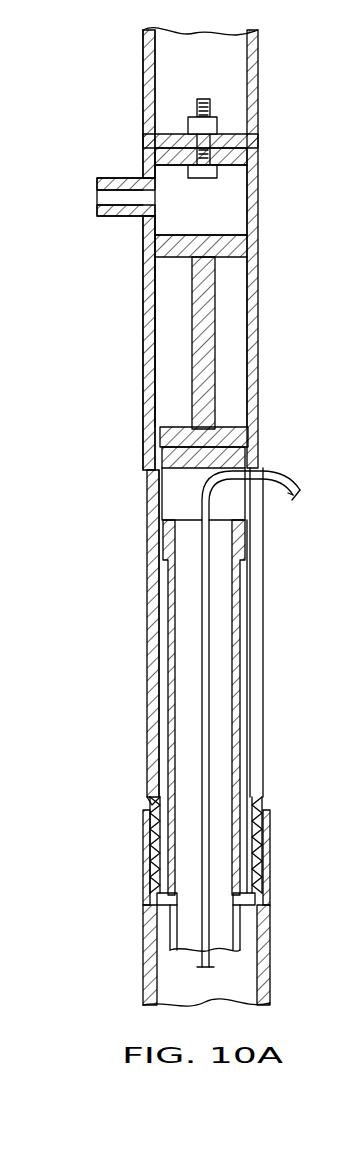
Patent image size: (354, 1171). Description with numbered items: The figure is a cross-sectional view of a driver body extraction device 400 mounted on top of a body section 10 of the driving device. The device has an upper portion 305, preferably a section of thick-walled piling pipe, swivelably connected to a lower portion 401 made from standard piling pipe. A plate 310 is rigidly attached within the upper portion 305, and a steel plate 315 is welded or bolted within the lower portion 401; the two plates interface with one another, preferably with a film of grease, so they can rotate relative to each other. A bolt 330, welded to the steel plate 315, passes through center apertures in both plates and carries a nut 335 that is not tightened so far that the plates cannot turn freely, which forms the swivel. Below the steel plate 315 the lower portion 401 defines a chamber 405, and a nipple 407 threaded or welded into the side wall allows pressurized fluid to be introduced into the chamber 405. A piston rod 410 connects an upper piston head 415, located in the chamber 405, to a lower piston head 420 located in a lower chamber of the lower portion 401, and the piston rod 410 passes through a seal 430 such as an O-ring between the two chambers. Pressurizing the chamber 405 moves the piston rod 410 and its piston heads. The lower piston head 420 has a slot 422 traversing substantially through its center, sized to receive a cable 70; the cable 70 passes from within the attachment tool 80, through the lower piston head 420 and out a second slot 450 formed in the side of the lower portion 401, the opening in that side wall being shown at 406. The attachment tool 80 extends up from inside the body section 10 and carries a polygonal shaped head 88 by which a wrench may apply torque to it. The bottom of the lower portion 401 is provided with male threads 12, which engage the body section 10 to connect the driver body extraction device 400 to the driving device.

The upper portion 305 is at (262, 64).
The nut 335 is at (196, 108).
The plate 310 is at (256, 140).
The steel plate 315 is at (257, 156).
The bolt 330 is at (222, 181).
The chamber 405 is at (229, 217).
The nipple 407 is at (100, 197).
The upper piston head 415 is at (168, 247).
The lower portion 401 is at (260, 312).
The driver body extraction device 400 is at (299, 357).
The piston rod 410 is at (191, 351).
The seal 430 is at (181, 432).
The lower piston head 420 is at (170, 458).
The cable 70 is at (291, 488).
The slot 422 is at (181, 491).
The polygonal shaped head 88 is at (165, 542).
The attachment tool 80 is at (150, 655).
The second slot 450 is at (258, 621).
The sleeve wall 406 is at (248, 729).
The male thread 12 is at (150, 832).
The body section 10 is at (145, 945).